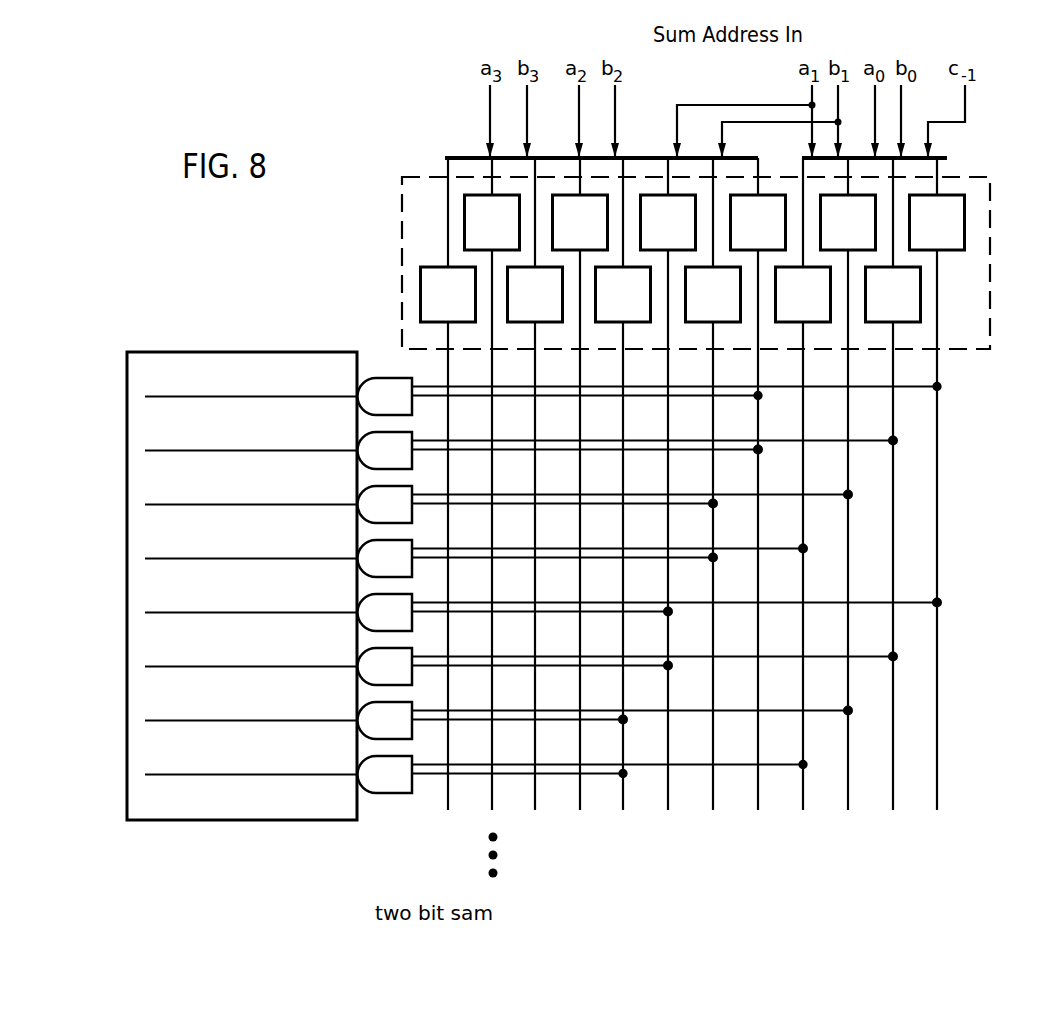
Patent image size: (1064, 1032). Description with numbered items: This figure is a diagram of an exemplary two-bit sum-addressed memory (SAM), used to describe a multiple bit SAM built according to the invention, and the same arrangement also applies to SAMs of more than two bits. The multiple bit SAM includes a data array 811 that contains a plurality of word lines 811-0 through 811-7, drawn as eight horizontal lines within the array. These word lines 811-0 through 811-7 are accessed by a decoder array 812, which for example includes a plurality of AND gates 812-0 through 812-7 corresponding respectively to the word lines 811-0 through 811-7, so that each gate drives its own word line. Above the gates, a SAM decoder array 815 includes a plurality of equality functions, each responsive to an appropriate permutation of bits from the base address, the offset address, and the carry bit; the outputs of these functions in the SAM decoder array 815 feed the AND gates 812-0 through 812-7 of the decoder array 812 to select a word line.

The data array 811 is at (202, 571).
The word line 811-0 is at (152, 382).
The word line 811-7 is at (152, 758).
The decoder array 812 is at (635, 540).
The AND gate 812-0 is at (392, 382).
The AND gate 812-7 is at (382, 782).
The SAM decoder array 815 is at (988, 235).